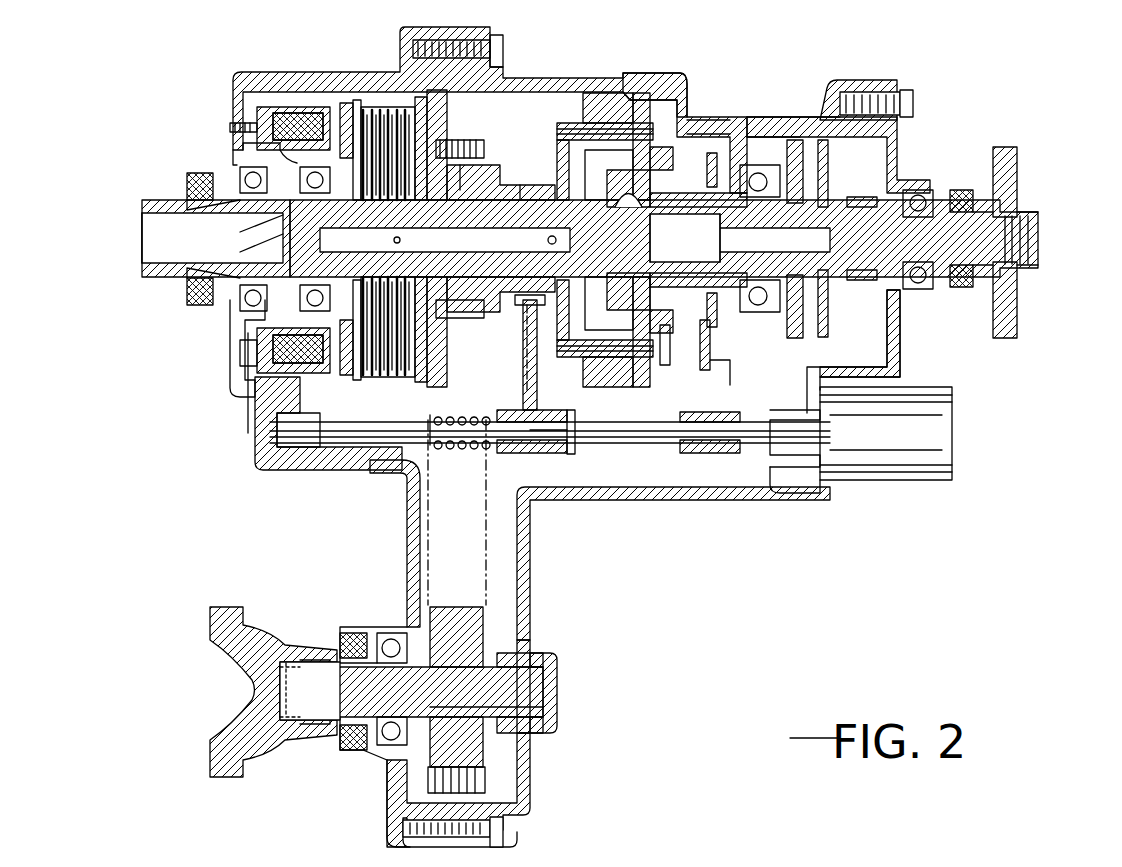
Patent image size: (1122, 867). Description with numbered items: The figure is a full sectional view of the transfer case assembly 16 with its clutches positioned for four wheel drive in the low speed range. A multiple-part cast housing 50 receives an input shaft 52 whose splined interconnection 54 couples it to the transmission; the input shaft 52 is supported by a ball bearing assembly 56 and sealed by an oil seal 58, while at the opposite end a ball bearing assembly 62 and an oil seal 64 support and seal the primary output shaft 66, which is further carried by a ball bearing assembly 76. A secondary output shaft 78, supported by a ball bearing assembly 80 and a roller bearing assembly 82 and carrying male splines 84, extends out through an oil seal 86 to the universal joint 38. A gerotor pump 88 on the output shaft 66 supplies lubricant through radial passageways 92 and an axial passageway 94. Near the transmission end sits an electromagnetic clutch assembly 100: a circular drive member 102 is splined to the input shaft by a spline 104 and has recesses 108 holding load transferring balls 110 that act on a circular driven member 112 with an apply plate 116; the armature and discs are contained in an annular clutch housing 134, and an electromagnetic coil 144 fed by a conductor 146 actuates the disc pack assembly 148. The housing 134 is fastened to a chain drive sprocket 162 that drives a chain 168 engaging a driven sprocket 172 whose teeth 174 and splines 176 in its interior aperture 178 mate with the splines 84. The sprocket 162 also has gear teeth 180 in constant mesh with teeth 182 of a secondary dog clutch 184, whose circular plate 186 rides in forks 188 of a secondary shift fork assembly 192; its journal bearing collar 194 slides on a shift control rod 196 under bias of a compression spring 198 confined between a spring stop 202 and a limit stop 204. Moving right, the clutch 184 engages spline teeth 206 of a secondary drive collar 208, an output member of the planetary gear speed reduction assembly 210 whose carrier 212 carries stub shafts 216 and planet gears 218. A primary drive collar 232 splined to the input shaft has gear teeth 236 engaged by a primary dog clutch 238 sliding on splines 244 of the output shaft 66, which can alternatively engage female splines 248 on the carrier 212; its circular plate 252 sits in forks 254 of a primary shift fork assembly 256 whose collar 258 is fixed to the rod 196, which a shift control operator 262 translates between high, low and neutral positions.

The transfer case assembly 16 is at (822, 30).
The universal joint 38 is at (270, 775).
The housing 50 is at (238, 92).
The input shaft 52 is at (150, 205).
The splined interconnection 54 is at (155, 250).
The ball bearing assembly 56 is at (240, 178).
The oil seal 58 is at (187, 190).
The ball bearing assembly 62 is at (918, 190).
The oil seal 64 is at (965, 190).
The primary output shaft 66 is at (1042, 240).
The ball bearing assembly 76 is at (830, 190).
The secondary output shaft 78 is at (560, 680).
The ball bearing assembly 80 is at (382, 770).
The roller bearing assembly 82 is at (555, 733).
The male splines 84 is at (452, 672).
The oil seal 86 is at (352, 626).
The gerotor pump 88 is at (830, 170).
The radial passageways 92 is at (575, 240).
The axial passageway 94 is at (624, 238).
The clutch assembly 100 is at (247, 60).
The circular drive member 102 is at (312, 100).
The spline 104 is at (235, 248).
The recesses 108 is at (235, 225).
The load transferring balls 110 is at (232, 128).
The circular driven member 112 is at (352, 100).
The apply plate 116 is at (385, 70).
The annular clutch housing 134 is at (425, 130).
The electromagnetic coil 144 is at (255, 340).
The conductor 146 is at (242, 436).
The disc pack assembly 148 is at (434, 104).
The chain drive sprocket 162 is at (485, 338).
The chain 168 is at (485, 135).
The driven sprocket 172 is at (527, 616).
The teeth 174 is at (472, 620).
The splines 176 is at (532, 650).
The interior aperture 178 is at (532, 697).
The gear teeth 180 is at (562, 125).
The teeth 182 is at (516, 207).
The secondary dog clutch 184 is at (585, 112).
The circular plate 186 is at (527, 302).
The forks 188 is at (527, 322).
The secondary shift fork assembly 192 is at (540, 388).
The journal bearing collar 194 is at (552, 452).
The shift control rod 196 is at (656, 488).
The compression spring 198 is at (456, 455).
The spring stop 202 is at (428, 420).
The limit stop 204 is at (571, 447).
The spline teeth 206 is at (612, 118).
The secondary drive collar 208 is at (600, 132).
The planetary gear speed reduction assembly 210 is at (650, 45).
The carrier 212 is at (660, 160).
The stub shafts 216 is at (660, 137).
The planet gears 218 is at (690, 118).
The primary drive collar 232 is at (685, 241).
The gear teeth 236 is at (630, 215).
The primary dog clutch 238 is at (769, 238).
The splines 244 is at (832, 90).
The female splines 248 is at (762, 130).
The circular plate 252 is at (665, 340).
The forks 254 is at (712, 322).
The primary shift fork assembly 256 is at (720, 385).
The collar 258 is at (742, 482).
The shift control operator 262 is at (886, 433).